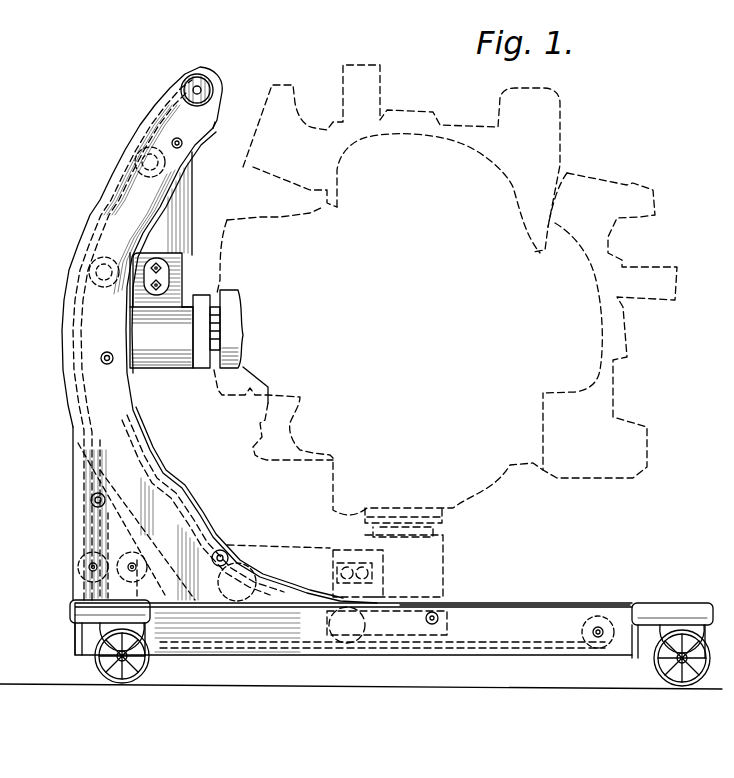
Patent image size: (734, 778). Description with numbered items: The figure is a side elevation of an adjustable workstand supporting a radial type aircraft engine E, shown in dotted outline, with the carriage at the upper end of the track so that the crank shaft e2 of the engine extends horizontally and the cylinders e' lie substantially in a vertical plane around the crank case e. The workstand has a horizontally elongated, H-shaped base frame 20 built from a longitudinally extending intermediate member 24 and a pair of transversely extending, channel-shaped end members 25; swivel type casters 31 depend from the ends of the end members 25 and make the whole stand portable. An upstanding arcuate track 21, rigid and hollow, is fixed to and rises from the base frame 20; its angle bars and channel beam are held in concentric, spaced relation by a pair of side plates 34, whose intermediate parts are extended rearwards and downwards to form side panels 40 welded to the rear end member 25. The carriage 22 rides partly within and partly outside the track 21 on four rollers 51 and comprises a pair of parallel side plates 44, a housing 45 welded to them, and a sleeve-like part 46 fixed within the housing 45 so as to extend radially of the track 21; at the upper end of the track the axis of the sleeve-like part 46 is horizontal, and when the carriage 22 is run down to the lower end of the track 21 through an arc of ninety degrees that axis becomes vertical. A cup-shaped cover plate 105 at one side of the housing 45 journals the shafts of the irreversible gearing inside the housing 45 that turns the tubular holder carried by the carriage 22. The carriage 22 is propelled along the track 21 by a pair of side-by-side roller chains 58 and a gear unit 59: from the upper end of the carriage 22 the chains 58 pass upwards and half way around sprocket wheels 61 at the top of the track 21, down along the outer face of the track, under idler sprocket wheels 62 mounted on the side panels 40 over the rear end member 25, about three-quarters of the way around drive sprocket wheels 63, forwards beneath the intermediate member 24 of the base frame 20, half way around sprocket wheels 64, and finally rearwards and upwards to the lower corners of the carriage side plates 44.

The base frame 20 is at (540, 594).
The upstanding arcuate track 21 is at (190, 489).
The carriage 22 is at (180, 227).
The intermediate member 24 is at (487, 598).
The end members 25 is at (72, 627).
The swivel type casters 31 is at (96, 666).
The side plates 34 is at (97, 408).
The side panels 40 is at (85, 487).
The side plates 44 is at (172, 240).
The housing 45 is at (175, 270).
The sleeve-like part 46 is at (170, 360).
The rollers 51 is at (118, 167).
The roller chains 58 is at (215, 126).
The gear unit 59 is at (90, 503).
The sprocket wheels 61 is at (178, 103).
The idler sprocket wheels 62 is at (198, 559).
The drive sprocket wheels 63 is at (78, 594).
The sprocket wheels 64 is at (603, 647).
The cover plate 105 is at (157, 299).
The engine E is at (441, 379).
The crank case e is at (248, 346).
The cylinders e' is at (395, 158).
The crank shaft e2 is at (210, 402).